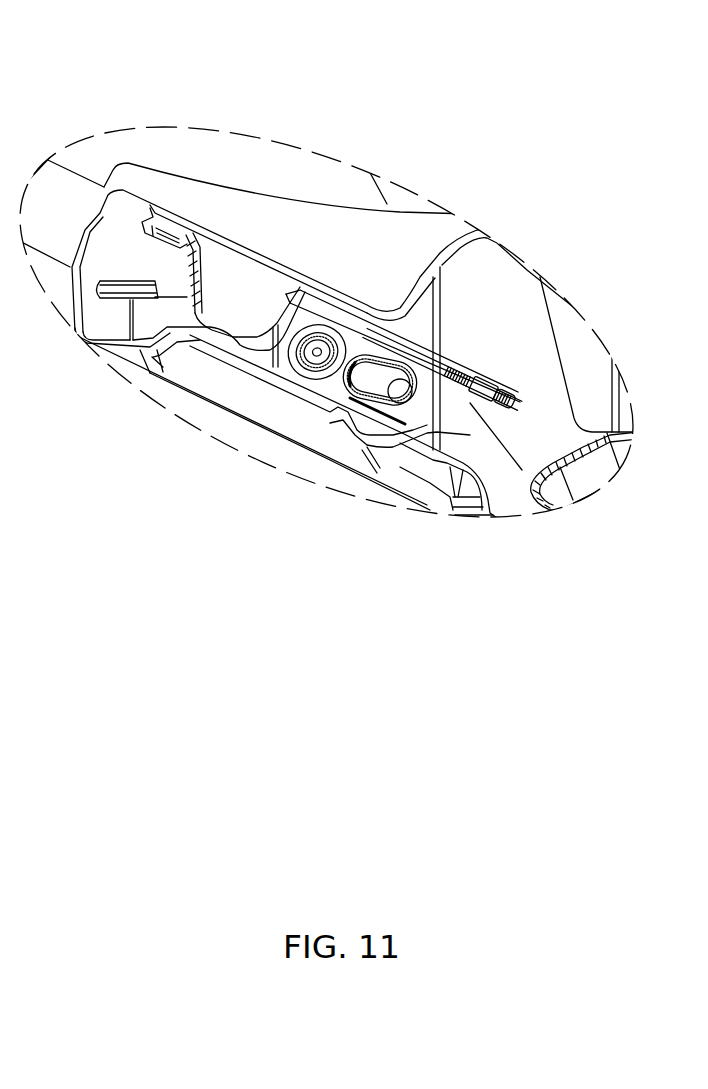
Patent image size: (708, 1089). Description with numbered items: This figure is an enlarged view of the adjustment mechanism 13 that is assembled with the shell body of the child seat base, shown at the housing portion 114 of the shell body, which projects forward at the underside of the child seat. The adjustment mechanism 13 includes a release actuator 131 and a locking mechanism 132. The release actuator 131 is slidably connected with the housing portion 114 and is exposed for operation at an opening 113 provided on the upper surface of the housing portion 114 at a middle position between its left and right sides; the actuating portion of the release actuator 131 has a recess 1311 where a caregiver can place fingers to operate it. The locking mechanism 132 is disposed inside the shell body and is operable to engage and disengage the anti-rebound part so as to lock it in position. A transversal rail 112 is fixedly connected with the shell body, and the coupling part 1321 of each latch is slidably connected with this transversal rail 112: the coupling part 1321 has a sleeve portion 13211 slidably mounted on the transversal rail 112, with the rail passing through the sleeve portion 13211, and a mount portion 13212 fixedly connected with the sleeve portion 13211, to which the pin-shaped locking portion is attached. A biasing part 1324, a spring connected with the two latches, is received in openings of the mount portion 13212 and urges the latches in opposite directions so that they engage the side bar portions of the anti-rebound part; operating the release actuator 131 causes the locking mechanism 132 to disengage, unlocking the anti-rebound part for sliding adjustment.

The transversal rail 112 is at (392, 362).
The opening 113 is at (198, 232).
The housing portion 114 is at (312, 247).
The recess 1311 is at (240, 320).
The adjustment mechanism 13 is at (348, 642).
The release actuator 131 is at (207, 330).
The locking mechanism 132 is at (415, 603).
The coupling part 1321 is at (335, 559).
The sleeve portion 13211 is at (352, 404).
The mount portion 13212 is at (303, 378).
The biasing part 1324 is at (462, 402).